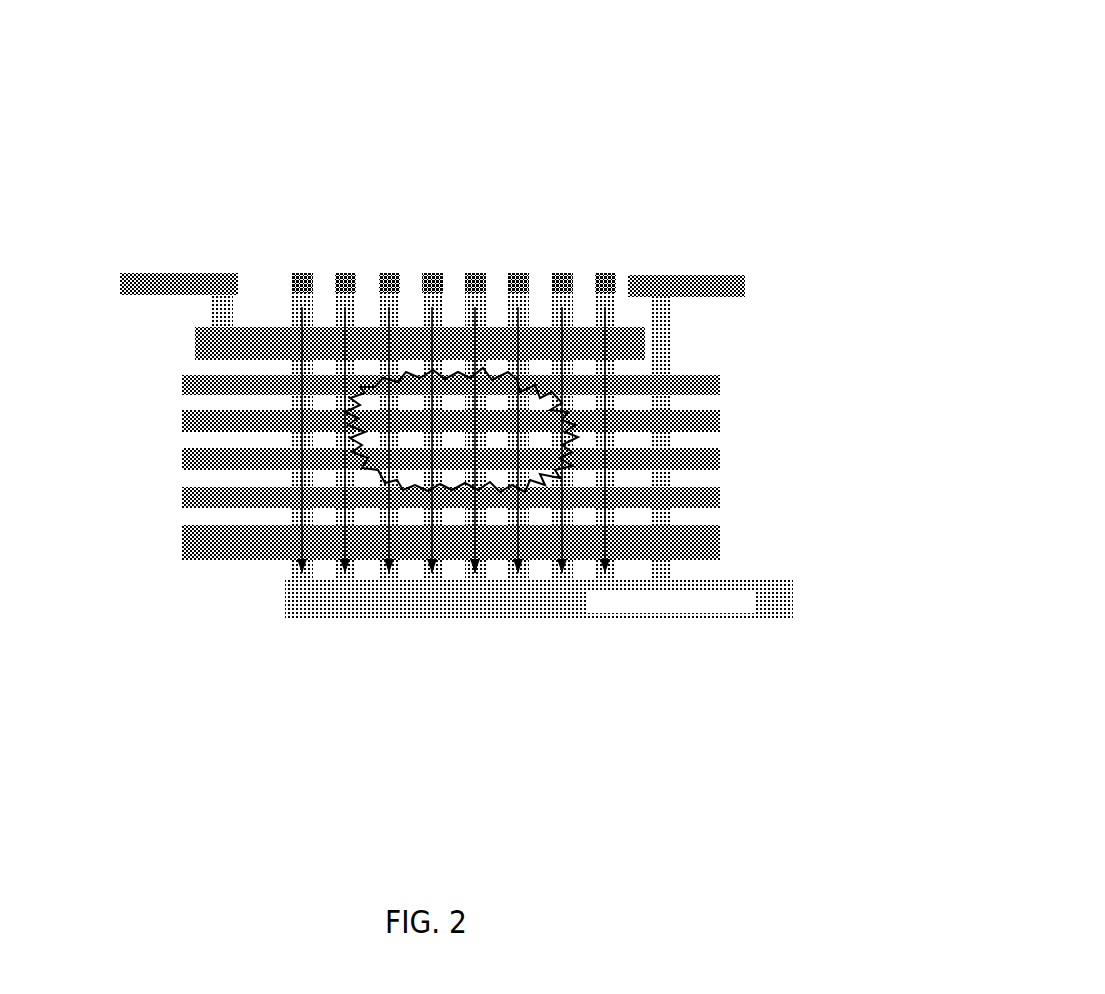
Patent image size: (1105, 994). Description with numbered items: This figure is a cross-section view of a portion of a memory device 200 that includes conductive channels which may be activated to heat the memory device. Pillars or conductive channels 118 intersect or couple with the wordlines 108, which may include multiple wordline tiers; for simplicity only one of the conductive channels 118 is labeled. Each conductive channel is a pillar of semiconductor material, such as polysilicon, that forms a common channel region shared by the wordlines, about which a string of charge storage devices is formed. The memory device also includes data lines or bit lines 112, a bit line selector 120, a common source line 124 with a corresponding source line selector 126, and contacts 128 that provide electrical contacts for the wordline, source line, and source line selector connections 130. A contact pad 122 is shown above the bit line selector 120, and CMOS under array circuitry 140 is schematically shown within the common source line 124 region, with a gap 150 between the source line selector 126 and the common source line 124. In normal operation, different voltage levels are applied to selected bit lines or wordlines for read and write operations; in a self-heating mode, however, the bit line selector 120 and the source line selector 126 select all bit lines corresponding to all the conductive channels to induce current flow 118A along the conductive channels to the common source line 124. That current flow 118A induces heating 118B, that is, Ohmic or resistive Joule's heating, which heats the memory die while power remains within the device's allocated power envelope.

The memory device 200 is at (974, 71).
The wordlines 108 is at (168, 358).
The bit lines 112 is at (445, 465).
The conductive channels 118 is at (439, 465).
The current flow 118A is at (453, 533).
The heating 118B is at (500, 482).
The bit line selector 120 is at (173, 340).
The left contact pad 122 is at (140, 273).
The common source line 124 is at (578, 616).
The source line selector 126 is at (180, 570).
The contacts 128 is at (672, 315).
The source line selector connections 130 is at (708, 275).
The CMOS under array circuitry 140 is at (671, 602).
The interface gap 150 is at (441, 576).